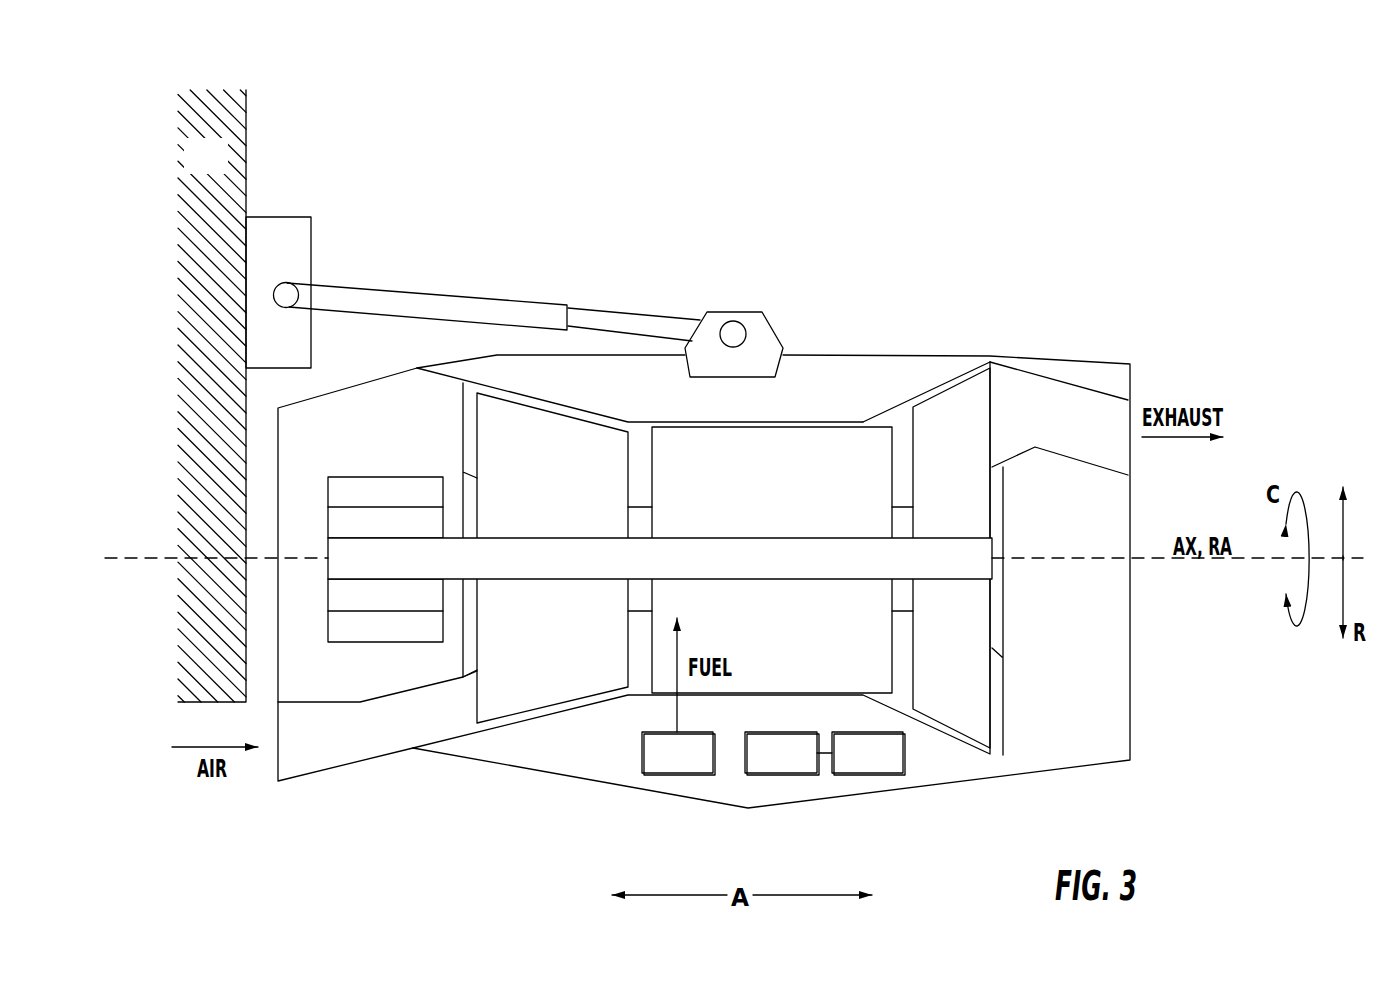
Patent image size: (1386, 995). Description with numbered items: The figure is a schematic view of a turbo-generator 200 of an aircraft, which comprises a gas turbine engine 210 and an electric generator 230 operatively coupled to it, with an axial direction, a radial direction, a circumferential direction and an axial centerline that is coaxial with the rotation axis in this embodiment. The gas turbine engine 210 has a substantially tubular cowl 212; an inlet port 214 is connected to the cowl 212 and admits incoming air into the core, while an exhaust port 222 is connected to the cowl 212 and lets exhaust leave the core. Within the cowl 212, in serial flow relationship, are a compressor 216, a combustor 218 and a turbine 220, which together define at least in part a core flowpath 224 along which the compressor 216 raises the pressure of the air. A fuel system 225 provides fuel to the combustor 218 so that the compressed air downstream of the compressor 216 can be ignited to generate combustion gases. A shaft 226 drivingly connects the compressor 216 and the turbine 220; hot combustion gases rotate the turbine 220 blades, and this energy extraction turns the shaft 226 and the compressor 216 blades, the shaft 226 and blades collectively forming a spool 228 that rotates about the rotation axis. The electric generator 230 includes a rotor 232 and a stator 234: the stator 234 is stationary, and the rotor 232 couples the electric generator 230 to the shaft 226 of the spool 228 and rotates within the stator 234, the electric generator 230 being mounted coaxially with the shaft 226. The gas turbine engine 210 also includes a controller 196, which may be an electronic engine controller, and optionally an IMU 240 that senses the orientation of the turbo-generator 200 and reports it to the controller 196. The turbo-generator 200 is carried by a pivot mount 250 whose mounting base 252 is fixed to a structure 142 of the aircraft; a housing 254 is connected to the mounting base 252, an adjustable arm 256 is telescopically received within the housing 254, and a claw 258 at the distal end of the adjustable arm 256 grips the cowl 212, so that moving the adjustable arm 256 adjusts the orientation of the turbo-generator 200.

The structure 142 is at (224, 170).
The controller 196 is at (886, 768).
The turbo-generator 200 is at (947, 238).
The gas turbine engine 210 is at (608, 733).
The cowl 212 is at (1005, 353).
The inlet port 214 is at (313, 780).
The compressor 216 is at (569, 505).
The combustor 218 is at (784, 505).
The turbine 220 is at (967, 505).
The exhaust port 222 is at (1045, 375).
The core flowpath 224 is at (903, 416).
The fuel system 225 is at (696, 768).
The shaft 226 is at (805, 580).
The spool 228 is at (577, 588).
The electric generator 230 is at (369, 511).
The rotor 232 is at (327, 598).
The stator 234 is at (388, 476).
The IMU 240 is at (800, 768).
The pivot mount 250 is at (497, 258).
The mounting base 252 is at (312, 235).
The housing 254 is at (438, 294).
The adjustable arm 256 is at (667, 316).
The claw 258 is at (743, 311).